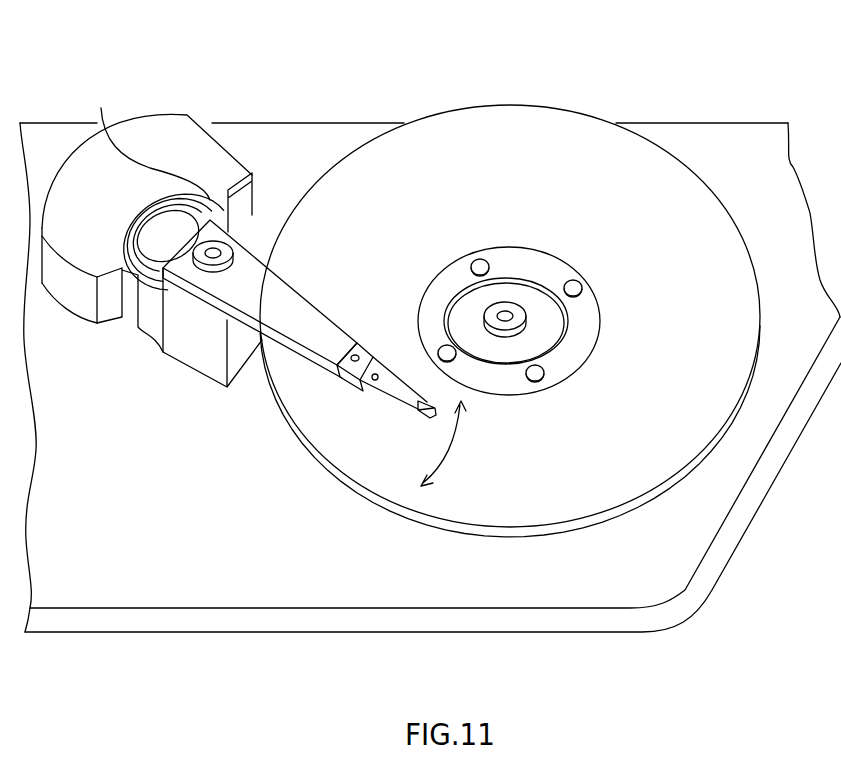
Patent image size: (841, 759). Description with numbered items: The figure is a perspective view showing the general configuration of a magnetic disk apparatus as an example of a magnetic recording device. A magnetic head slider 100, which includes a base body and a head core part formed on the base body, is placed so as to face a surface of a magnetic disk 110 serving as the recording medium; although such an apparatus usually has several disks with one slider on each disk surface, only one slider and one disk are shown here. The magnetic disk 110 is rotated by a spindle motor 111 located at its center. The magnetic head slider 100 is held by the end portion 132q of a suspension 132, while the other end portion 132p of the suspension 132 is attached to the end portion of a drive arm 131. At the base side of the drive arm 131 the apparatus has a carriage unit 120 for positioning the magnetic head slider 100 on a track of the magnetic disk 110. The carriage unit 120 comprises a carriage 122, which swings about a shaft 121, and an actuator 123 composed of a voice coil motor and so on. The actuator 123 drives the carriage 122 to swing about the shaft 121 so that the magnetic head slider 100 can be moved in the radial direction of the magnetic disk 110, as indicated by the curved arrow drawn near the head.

The magnetic head slider 100 is at (427, 395).
The magnetic disk 110 is at (652, 163).
The spindle motor 111 is at (518, 315).
The carriage unit 120 is at (257, 351).
The shaft 121 is at (230, 253).
The carriage 122 is at (197, 347).
The actuator 123 is at (83, 163).
The drive arm 131 is at (280, 297).
The suspension 132 is at (342, 373).
The end portion of suspension 132p is at (361, 392).
The end portion of suspension 132q is at (407, 416).